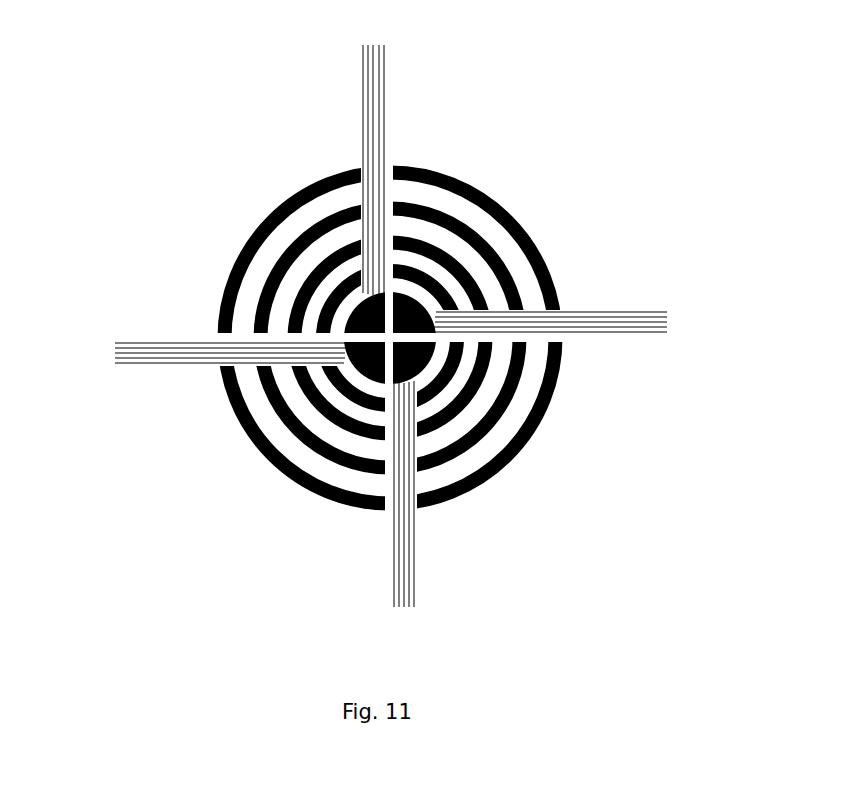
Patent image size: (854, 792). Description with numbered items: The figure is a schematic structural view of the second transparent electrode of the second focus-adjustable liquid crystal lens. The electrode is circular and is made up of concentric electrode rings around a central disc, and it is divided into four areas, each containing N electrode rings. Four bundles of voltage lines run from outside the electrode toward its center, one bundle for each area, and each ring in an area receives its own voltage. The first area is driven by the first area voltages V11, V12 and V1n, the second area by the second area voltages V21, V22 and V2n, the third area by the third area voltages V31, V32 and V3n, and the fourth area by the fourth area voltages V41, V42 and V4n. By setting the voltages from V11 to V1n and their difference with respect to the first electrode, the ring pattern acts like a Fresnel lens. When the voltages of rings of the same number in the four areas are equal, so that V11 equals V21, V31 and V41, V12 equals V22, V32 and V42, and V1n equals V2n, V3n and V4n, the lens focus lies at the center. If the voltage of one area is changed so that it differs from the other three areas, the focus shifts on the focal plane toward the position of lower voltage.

The first area voltage V11 is at (385, 169).
The first area voltage V12 is at (380, 169).
The first area voltage V1n is at (370, 170).
The second area voltage V21 is at (565, 344).
The second area voltage V22 is at (569, 334).
The second area voltage V2n is at (565, 315).
The third area voltage V31 is at (401, 508).
The third area voltage V32 is at (410, 508).
The third area voltage V3n is at (421, 507).
The fourth area voltage V41 is at (206, 348).
The fourth area voltage V42 is at (205, 355).
The fourth area voltage V4n is at (205, 371).